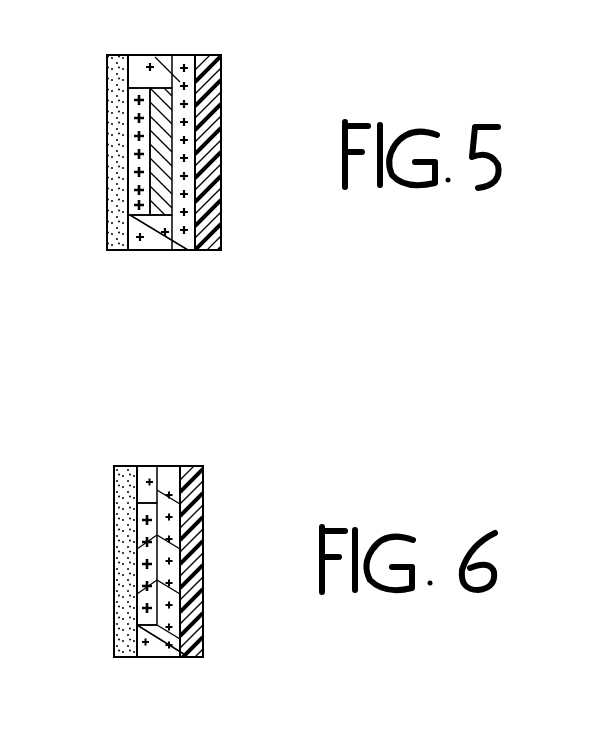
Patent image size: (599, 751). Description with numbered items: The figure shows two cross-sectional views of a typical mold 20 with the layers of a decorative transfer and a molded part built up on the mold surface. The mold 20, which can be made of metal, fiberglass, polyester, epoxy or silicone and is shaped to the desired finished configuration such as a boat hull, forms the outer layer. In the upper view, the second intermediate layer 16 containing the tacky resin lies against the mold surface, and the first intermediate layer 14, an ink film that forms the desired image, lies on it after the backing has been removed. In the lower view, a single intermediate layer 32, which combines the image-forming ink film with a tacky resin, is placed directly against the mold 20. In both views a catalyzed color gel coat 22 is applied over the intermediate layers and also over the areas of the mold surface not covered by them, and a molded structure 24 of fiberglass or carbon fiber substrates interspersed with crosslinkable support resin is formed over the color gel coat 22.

In FIG. 5, the first intermediate layer 14 is at (162, 86).
In FIG. 5, the second intermediate layer 16 is at (143, 86).
In FIG. 5, the mold 20 is at (118, 253).
In FIG. 6, the mold 20 is at (121, 662).
In FIG. 5, the catalyzed color gel coat 22 is at (179, 233).
In FIG. 6, the catalyzed color gel coat 22 is at (160, 650).
In FIG. 5, the molded structure 24 is at (230, 184).
In FIG. 6, the molded structure 24 is at (197, 621).
In FIG. 6, the intermediate layer 32 is at (147, 500).